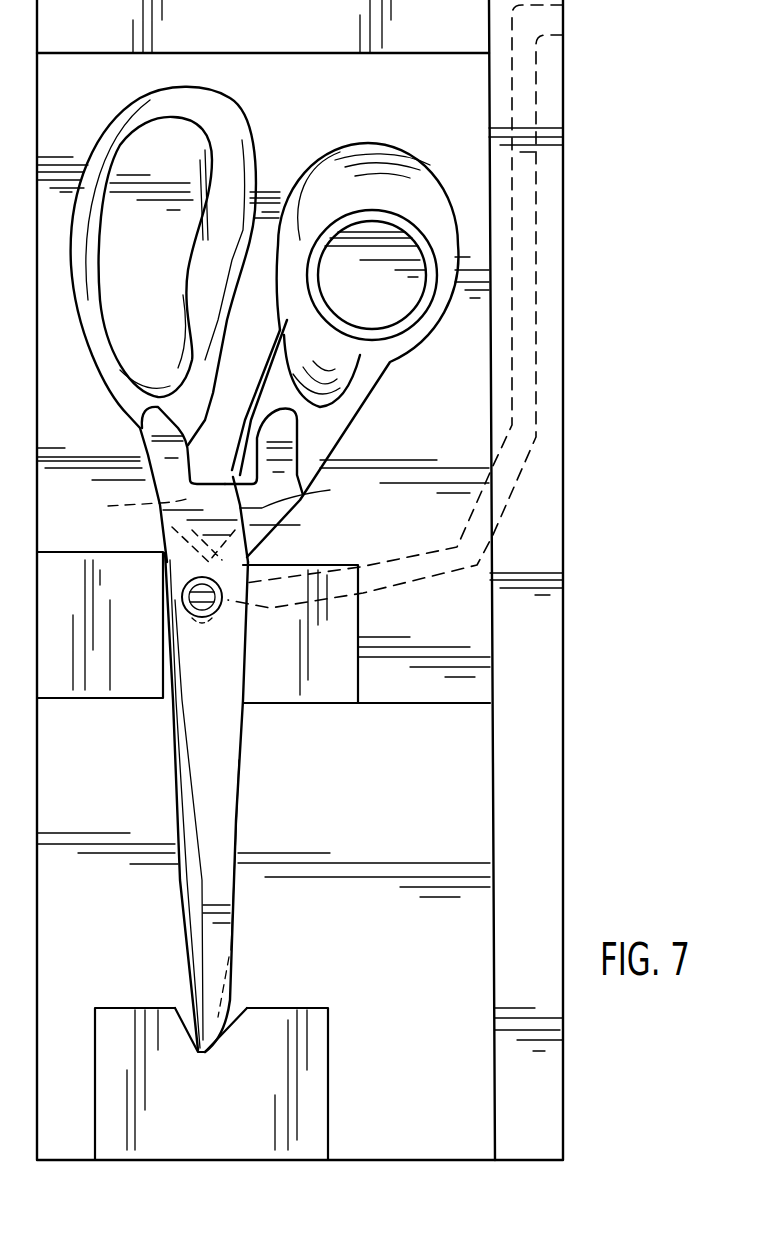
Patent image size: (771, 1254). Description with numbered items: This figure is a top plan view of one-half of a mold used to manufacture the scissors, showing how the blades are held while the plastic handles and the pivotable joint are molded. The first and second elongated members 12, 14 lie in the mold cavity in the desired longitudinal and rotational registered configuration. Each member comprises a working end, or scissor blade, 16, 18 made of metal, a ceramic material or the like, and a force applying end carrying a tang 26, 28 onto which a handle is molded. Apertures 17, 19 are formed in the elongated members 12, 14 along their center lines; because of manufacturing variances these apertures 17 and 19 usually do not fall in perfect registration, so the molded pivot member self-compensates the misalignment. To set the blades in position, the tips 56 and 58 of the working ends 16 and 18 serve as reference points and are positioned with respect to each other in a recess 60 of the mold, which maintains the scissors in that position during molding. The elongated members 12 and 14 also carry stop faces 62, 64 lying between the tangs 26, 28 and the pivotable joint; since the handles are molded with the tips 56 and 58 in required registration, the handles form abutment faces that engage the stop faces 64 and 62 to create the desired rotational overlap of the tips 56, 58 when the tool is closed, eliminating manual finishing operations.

The first elongated member 12 is at (260, 569).
The second elongated member 14 is at (233, 970).
The working end 16 is at (222, 778).
The aperture 17 is at (190, 612).
The working end 18 is at (233, 928).
The aperture 19 is at (258, 556).
The tang 26 is at (150, 430).
The tang 28 is at (300, 448).
The tip 56 is at (200, 1052).
The tip 58 is at (235, 1056).
The recess 60 is at (178, 1005).
The stop face 62 is at (306, 491).
The stop face 64 is at (128, 504).